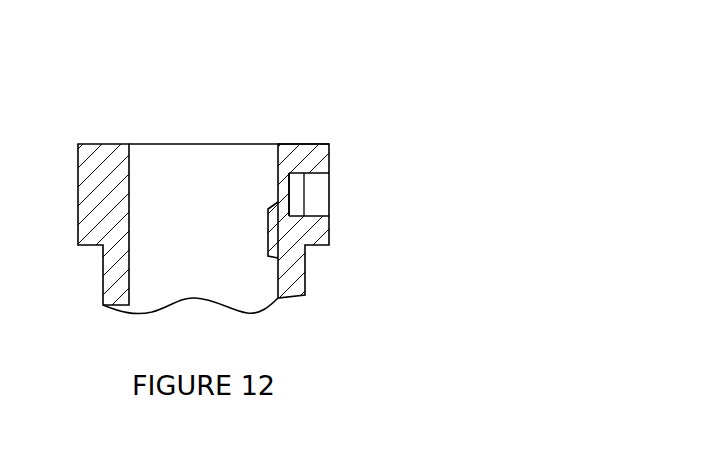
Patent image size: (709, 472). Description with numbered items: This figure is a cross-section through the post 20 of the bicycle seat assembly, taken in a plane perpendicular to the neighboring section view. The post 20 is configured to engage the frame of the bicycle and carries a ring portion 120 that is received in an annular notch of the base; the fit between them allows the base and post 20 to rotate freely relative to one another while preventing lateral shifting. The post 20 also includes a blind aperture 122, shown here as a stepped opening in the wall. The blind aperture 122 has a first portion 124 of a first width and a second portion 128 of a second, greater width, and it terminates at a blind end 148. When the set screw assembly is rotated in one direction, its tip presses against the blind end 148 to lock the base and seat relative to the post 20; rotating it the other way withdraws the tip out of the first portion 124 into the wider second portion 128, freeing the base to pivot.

The post 20 is at (342, 185).
The ring portion 120 is at (302, 175).
The blind aperture 122 is at (310, 185).
The first portion 124 is at (292, 173).
The second portion 128 is at (312, 195).
The blind end 148 is at (270, 250).